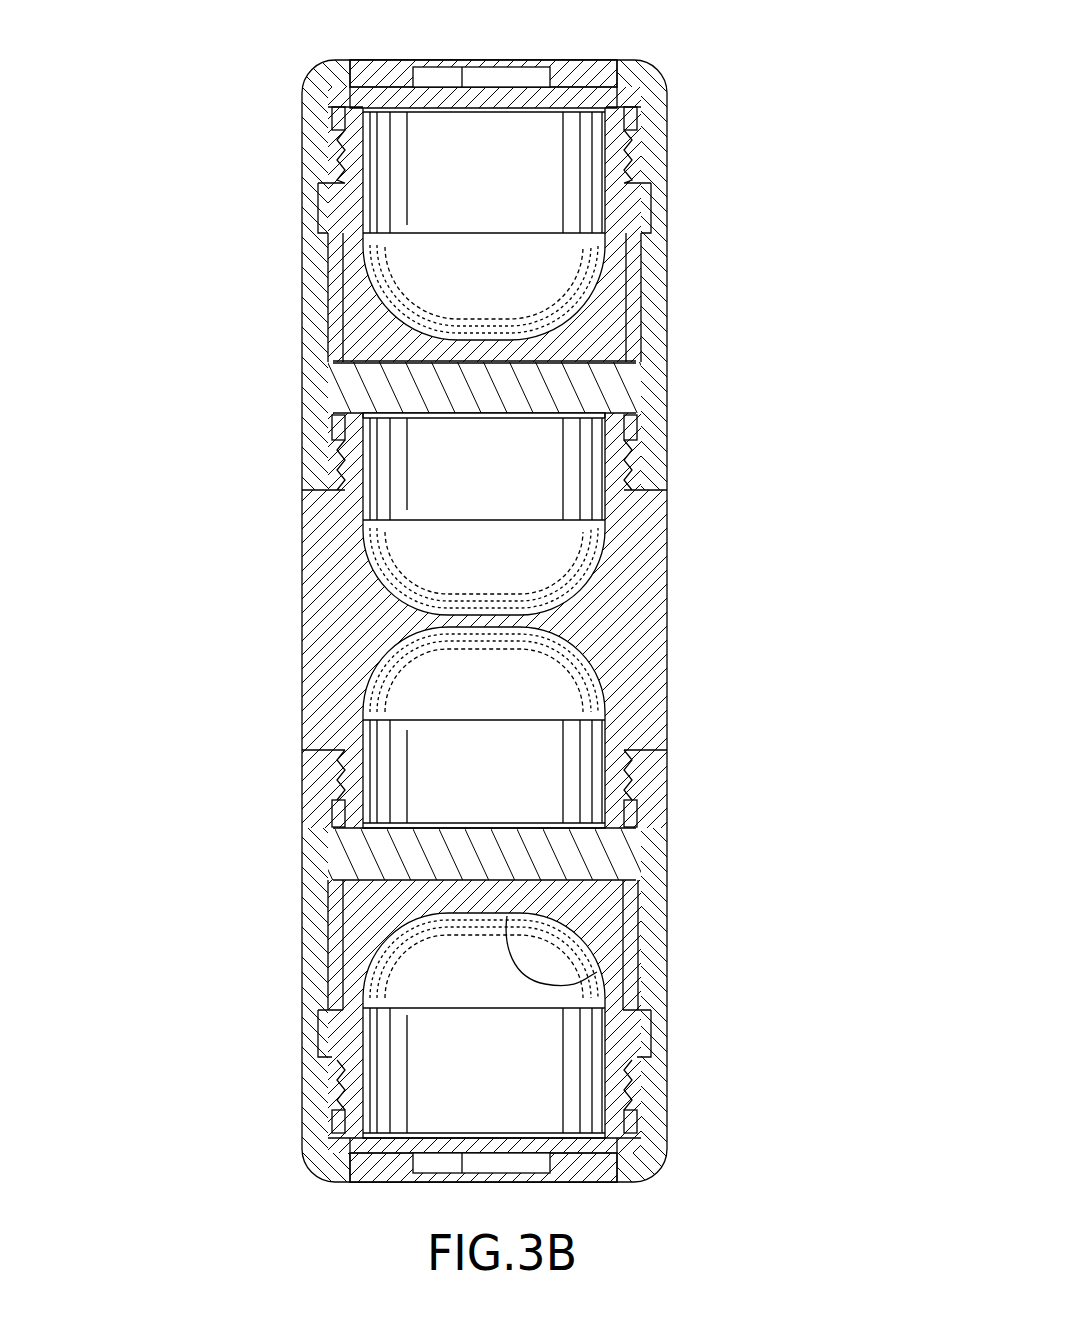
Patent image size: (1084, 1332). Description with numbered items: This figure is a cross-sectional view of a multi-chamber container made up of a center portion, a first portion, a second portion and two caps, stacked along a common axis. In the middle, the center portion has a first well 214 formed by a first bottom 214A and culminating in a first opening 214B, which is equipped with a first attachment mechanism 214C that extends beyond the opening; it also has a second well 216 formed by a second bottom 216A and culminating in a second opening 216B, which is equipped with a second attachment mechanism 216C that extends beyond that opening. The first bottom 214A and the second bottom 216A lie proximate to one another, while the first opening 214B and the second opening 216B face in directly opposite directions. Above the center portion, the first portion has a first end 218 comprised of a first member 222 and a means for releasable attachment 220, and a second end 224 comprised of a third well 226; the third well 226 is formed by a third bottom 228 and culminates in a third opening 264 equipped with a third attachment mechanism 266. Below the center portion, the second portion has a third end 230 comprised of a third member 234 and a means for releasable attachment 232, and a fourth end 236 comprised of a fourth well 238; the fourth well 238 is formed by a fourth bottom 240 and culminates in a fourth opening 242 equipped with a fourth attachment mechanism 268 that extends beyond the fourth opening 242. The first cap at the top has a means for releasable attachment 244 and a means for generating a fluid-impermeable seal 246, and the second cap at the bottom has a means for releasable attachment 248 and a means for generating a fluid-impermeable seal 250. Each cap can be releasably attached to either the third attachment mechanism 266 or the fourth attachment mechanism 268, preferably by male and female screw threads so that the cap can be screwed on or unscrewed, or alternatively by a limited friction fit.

The first well 214 is at (546, 528).
The first bottom 214A is at (457, 613).
The first opening 214B is at (423, 412).
The first attachment mechanism 214C is at (335, 447).
The second well 216 is at (558, 705).
The second bottom 216A is at (463, 630).
The second opening 216B is at (387, 830).
The second attachment mechanism 216C is at (335, 795).
The first end 218 is at (551, 396).
The means for releasable attachment 220 is at (633, 451).
The first member 222 is at (423, 362).
The second end 224 is at (594, 211).
The third well 226 is at (435, 235).
The third bottom 228 is at (470, 330).
The third end 230 is at (551, 1033).
The means for releasable attachment 232 is at (623, 777).
The third member 234 is at (413, 883).
The fourth end 236 is at (538, 858).
The fourth well 238 is at (436, 980).
The fourth bottom 240 is at (597, 972).
The fourth opening 242 is at (537, 1128).
The means for releasable attachment 244 is at (630, 157).
The means for generating a fluid-impermeable seal 246 is at (553, 112).
The means for releasable attachment 248 is at (335, 1092).
The means for generating a fluid-impermeable seal 250 is at (390, 1140).
The third opening 264 is at (403, 115).
The third attachment mechanism 266 is at (343, 152).
The fourth attachment mechanism 268 is at (623, 1080).